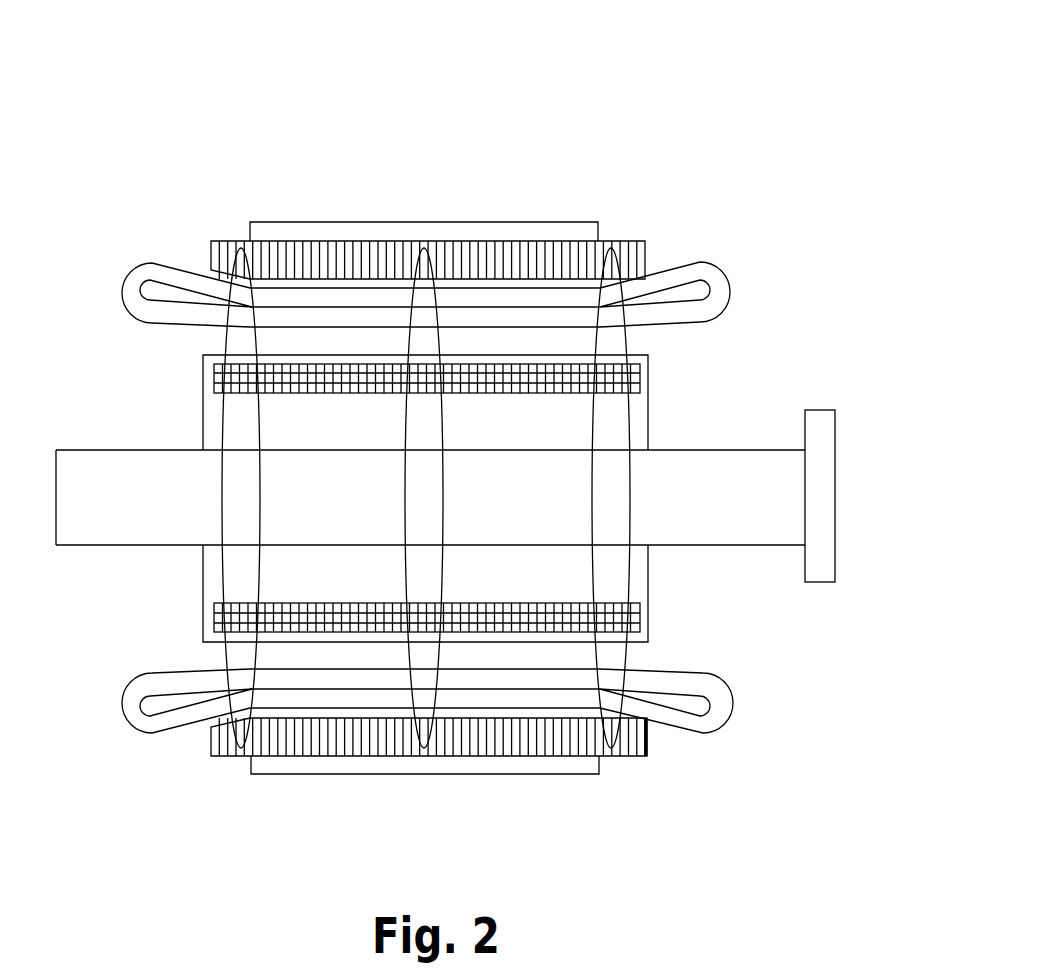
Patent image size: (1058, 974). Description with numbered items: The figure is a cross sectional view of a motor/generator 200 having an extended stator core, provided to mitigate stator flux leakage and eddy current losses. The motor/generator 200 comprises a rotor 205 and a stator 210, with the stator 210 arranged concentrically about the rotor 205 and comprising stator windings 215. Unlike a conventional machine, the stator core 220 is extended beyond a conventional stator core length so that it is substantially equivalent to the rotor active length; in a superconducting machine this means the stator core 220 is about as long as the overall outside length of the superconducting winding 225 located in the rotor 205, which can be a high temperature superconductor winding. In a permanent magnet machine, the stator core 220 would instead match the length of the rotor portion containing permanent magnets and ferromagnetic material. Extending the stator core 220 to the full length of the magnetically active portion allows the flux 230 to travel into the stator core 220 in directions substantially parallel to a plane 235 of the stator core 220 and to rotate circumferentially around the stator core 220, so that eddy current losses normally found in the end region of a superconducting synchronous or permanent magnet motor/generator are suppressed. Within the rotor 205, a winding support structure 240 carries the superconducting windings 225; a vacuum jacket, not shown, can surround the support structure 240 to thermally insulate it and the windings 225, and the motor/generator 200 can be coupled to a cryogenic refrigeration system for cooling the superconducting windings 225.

The motor/generator 200 is at (598, 85).
The rotor 205 is at (191, 392).
The stator 210 is at (172, 242).
The stator windings 215 is at (698, 262).
The stator core 220 is at (618, 244).
The superconducting winding 225 is at (642, 365).
The flux 230 is at (224, 657).
The plane of the stator core 235 is at (641, 757).
The winding support structure 240 is at (650, 405).